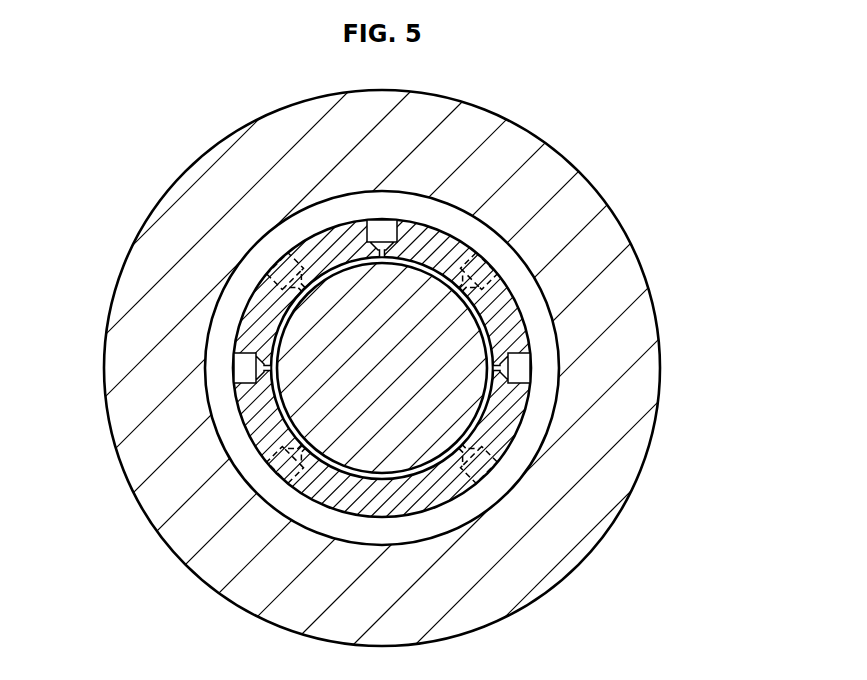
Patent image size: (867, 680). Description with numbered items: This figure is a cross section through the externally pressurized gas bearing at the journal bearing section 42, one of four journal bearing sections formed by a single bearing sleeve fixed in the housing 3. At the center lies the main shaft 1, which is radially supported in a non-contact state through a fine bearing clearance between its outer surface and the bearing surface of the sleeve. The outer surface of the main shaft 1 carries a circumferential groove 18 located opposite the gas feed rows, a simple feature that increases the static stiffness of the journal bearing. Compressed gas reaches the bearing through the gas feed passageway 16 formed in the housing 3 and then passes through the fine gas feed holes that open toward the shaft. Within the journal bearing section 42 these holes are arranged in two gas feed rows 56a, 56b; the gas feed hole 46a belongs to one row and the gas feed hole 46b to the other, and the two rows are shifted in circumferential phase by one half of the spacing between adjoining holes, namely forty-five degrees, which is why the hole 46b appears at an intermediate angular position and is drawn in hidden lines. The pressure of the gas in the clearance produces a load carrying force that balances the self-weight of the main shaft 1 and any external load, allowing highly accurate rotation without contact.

The main shaft 1 is at (362, 452).
The housing 3 is at (512, 142).
The gas feed passageway 16 is at (485, 237).
The circumferential groove 18 is at (415, 467).
The journal bearing section 42 is at (523, 428).
The gas feed hole 46a is at (360, 245).
The gas feed hole 46b is at (277, 297).
The gas feed row 56a is at (230, 367).
The gas feed row 56b is at (273, 479).